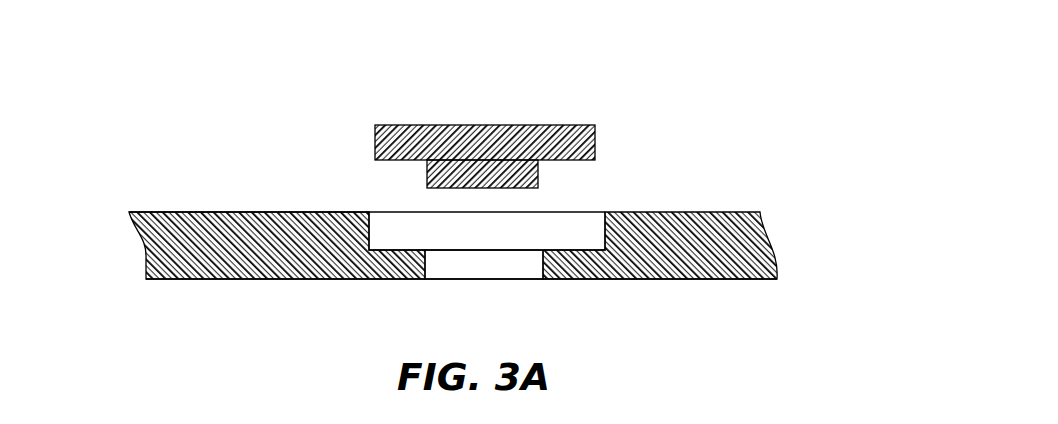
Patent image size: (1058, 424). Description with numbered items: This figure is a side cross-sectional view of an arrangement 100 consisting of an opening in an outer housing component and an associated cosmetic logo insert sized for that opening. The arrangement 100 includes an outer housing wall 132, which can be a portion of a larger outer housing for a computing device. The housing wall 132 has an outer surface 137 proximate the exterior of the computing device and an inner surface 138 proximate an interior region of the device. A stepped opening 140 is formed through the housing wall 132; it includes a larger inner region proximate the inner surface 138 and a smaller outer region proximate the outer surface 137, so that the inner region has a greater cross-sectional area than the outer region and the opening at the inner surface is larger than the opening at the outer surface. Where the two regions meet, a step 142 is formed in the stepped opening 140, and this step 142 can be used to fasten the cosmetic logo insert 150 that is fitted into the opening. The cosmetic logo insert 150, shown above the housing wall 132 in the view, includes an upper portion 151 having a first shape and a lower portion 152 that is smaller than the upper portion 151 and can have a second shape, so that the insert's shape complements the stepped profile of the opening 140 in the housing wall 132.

The arrangement 100 is at (724, 71).
The outer housing wall 132 is at (146, 256).
The outer surface 137 is at (228, 287).
The inner surface 138 is at (263, 203).
The stepped opening 140 is at (498, 297).
The step 142 is at (379, 261).
The cosmetic logo insert 150 is at (344, 113).
The upper portion 151 is at (588, 133).
The lower portion 152 is at (532, 172).